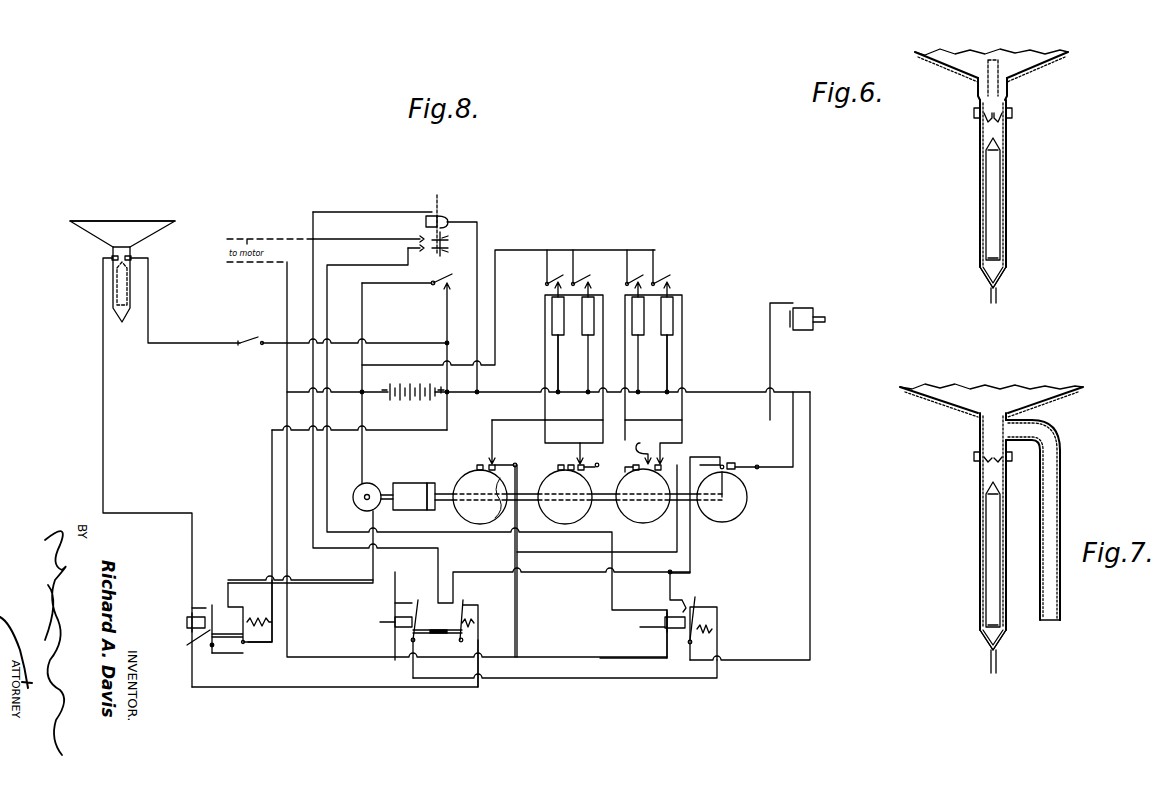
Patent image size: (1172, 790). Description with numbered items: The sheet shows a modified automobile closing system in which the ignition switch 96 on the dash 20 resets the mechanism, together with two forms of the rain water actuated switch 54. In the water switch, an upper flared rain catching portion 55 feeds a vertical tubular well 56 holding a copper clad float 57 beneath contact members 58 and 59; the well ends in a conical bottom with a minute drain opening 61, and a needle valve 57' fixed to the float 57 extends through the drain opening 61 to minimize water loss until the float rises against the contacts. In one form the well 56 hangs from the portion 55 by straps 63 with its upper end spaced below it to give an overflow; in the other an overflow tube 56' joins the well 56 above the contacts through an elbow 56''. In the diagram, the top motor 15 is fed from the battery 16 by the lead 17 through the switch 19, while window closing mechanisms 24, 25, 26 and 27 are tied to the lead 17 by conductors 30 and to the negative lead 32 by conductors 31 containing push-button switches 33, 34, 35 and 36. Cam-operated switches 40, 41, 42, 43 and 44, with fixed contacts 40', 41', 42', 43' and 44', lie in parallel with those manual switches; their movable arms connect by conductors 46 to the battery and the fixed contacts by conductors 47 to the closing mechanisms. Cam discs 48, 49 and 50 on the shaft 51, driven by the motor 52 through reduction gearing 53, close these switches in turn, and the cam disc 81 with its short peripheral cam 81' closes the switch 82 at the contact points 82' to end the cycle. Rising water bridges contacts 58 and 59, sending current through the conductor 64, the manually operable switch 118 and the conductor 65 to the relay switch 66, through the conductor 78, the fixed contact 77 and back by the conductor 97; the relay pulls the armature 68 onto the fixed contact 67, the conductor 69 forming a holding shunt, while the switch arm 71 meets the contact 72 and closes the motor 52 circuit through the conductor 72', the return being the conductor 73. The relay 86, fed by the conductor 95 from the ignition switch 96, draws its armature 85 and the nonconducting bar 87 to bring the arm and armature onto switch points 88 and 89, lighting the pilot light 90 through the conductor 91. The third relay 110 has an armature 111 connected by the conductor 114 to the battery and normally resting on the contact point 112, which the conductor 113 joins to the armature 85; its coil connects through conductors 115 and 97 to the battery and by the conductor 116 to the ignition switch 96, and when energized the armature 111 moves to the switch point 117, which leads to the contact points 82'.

In FIG. 8, the motor 15 is at (800, 308).
In FIG. 8, the battery 16 is at (402, 401).
In FIG. 8, the lead 17 is at (585, 383).
In FIG. 8, the switch 19 is at (433, 290).
In FIG. 8, the dash 20 is at (432, 197).
In FIG. 8, the closing mechanism 24 is at (552, 322).
In FIG. 8, the closing mechanism 25 is at (582, 333).
In FIG. 8, the closing mechanism 26 is at (632, 332).
In FIG. 8, the closing mechanism 27 is at (661, 333).
In FIG. 8, the conductors 30 is at (558, 360).
In FIG. 8, the conductors 31 is at (545, 290).
In FIG. 8, the negative lead 32 is at (497, 270).
In FIG. 8, the switch 33 is at (556, 270).
In FIG. 8, the switch 34 is at (580, 265).
In FIG. 8, the switch 35 is at (630, 268).
In FIG. 8, the switch 36 is at (662, 272).
In FIG. 8, the switch 40 is at (468, 458).
In FIG. 8, the fixed contact 40' is at (517, 538).
In FIG. 8, the switch 41 is at (545, 473).
In FIG. 8, the fixed contact 41' is at (553, 445).
In FIG. 8, the switch 42 is at (600, 472).
In FIG. 8, the fixed contact 42' is at (598, 441).
In FIG. 8, the switch 43 is at (634, 477).
In FIG. 8, the fixed contact 43' is at (638, 442).
In FIG. 8, the switch 44 is at (711, 463).
In FIG. 8, the fixed contact 44' is at (681, 445).
In FIG. 8, the conductors 46 is at (535, 548).
In FIG. 8, the conductors 47 is at (592, 407).
In FIG. 8, the cam disc 48 is at (460, 512).
In FIG. 8, the cam disc 49 is at (587, 528).
In FIG. 8, the cam disc 50 is at (672, 538).
In FIG. 8, the shaft 51 is at (443, 488).
In FIG. 8, the motor 52 is at (355, 491).
In FIG. 8, the reduction gearing 53 is at (412, 484).
In FIG. 8, the rain water actuated switch 54 is at (75, 217).
In FIG. 8, the flared rain catching portion 55 is at (118, 221).
In FIG. 6, the flared rain catching portion 55 is at (952, 50).
In FIG. 7, the flared rain catching portion 55 is at (1028, 392).
In FIG. 8, the tubular well 56 is at (96, 284).
In FIG. 6, the tubular well 56 is at (1011, 194).
In FIG. 7, the tubular well 56 is at (979, 531).
In FIG. 7, the overflow tube 56' is at (1078, 535).
In FIG. 7, the elbow 56'' is at (1047, 516).
In FIG. 8, the float 57 is at (148, 283).
In FIG. 6, the float 57 is at (974, 199).
In FIG. 7, the float 57 is at (973, 554).
In FIG. 6, the needle valve 57' is at (1014, 290).
In FIG. 7, the needle valve 57' is at (1014, 661).
In FIG. 8, the contact member 58 is at (131, 257).
In FIG. 6, the contact member 58 is at (1012, 130).
In FIG. 8, the contact member 59 is at (112, 257).
In FIG. 6, the contact member 59 is at (976, 130).
In FIG. 6, the drain opening 61 is at (988, 283).
In FIG. 7, the drain opening 61 is at (987, 647).
In FIG. 6, the straps 63 is at (975, 72).
In FIG. 8, the conductor 64 is at (188, 341).
In FIG. 6, the conductor 64 is at (1012, 120).
In FIG. 8, the conductor 65 is at (103, 386).
In FIG. 6, the conductor 65 is at (937, 120).
In FIG. 8, the relay switch 66 is at (187, 623).
In FIG. 8, the fixed contact 67 is at (203, 600).
In FIG. 8, the armature 68 is at (185, 643).
In FIG. 8, the conductor 69 is at (272, 461).
In FIG. 8, the switch arm 71 is at (248, 618).
In FIG. 8, the contact 72 is at (234, 618).
In FIG. 8, the conductor 72' is at (300, 570).
In FIG. 8, the conductor 73 is at (363, 452).
In FIG. 8, the fixed contact 77 is at (470, 603).
In FIG. 8, the conductor 78 is at (308, 687).
In FIG. 8, the cam disc 81 is at (708, 515).
In FIG. 8, the peripheral cam 81' is at (756, 478).
In FIG. 8, the switch 82 is at (760, 430).
In FIG. 8, the contact points 82' is at (739, 463).
In FIG. 8, the armature 85 is at (419, 617).
In FIG. 8, the relay 86 is at (395, 622).
In FIG. 8, the nonconducting bar 87 is at (428, 636).
In FIG. 8, the switch point 88 is at (452, 597).
In FIG. 8, the switch point 89 is at (410, 598).
In FIG. 8, the pilot light 90 is at (448, 214).
In FIG. 8, the conductor 91 is at (400, 556).
In FIG. 8, the conductor 95 is at (570, 573).
In FIG. 8, the ignition switch 96 is at (443, 254).
In FIG. 8, the conductor 97 is at (287, 409).
In FIG. 8, the third relay 110 is at (651, 624).
In FIG. 8, the armature 111 is at (713, 614).
In FIG. 8, the contact point 112 is at (702, 604).
In FIG. 8, the conductor 113 is at (533, 680).
In FIG. 8, the conductor 114 is at (810, 600).
In FIG. 8, the conductor 115 is at (617, 634).
In FIG. 8, the conductor 116 is at (330, 359).
In FIG. 8, the switch point 117 is at (686, 590).
In FIG. 8, the manually operable switch 118 is at (250, 338).